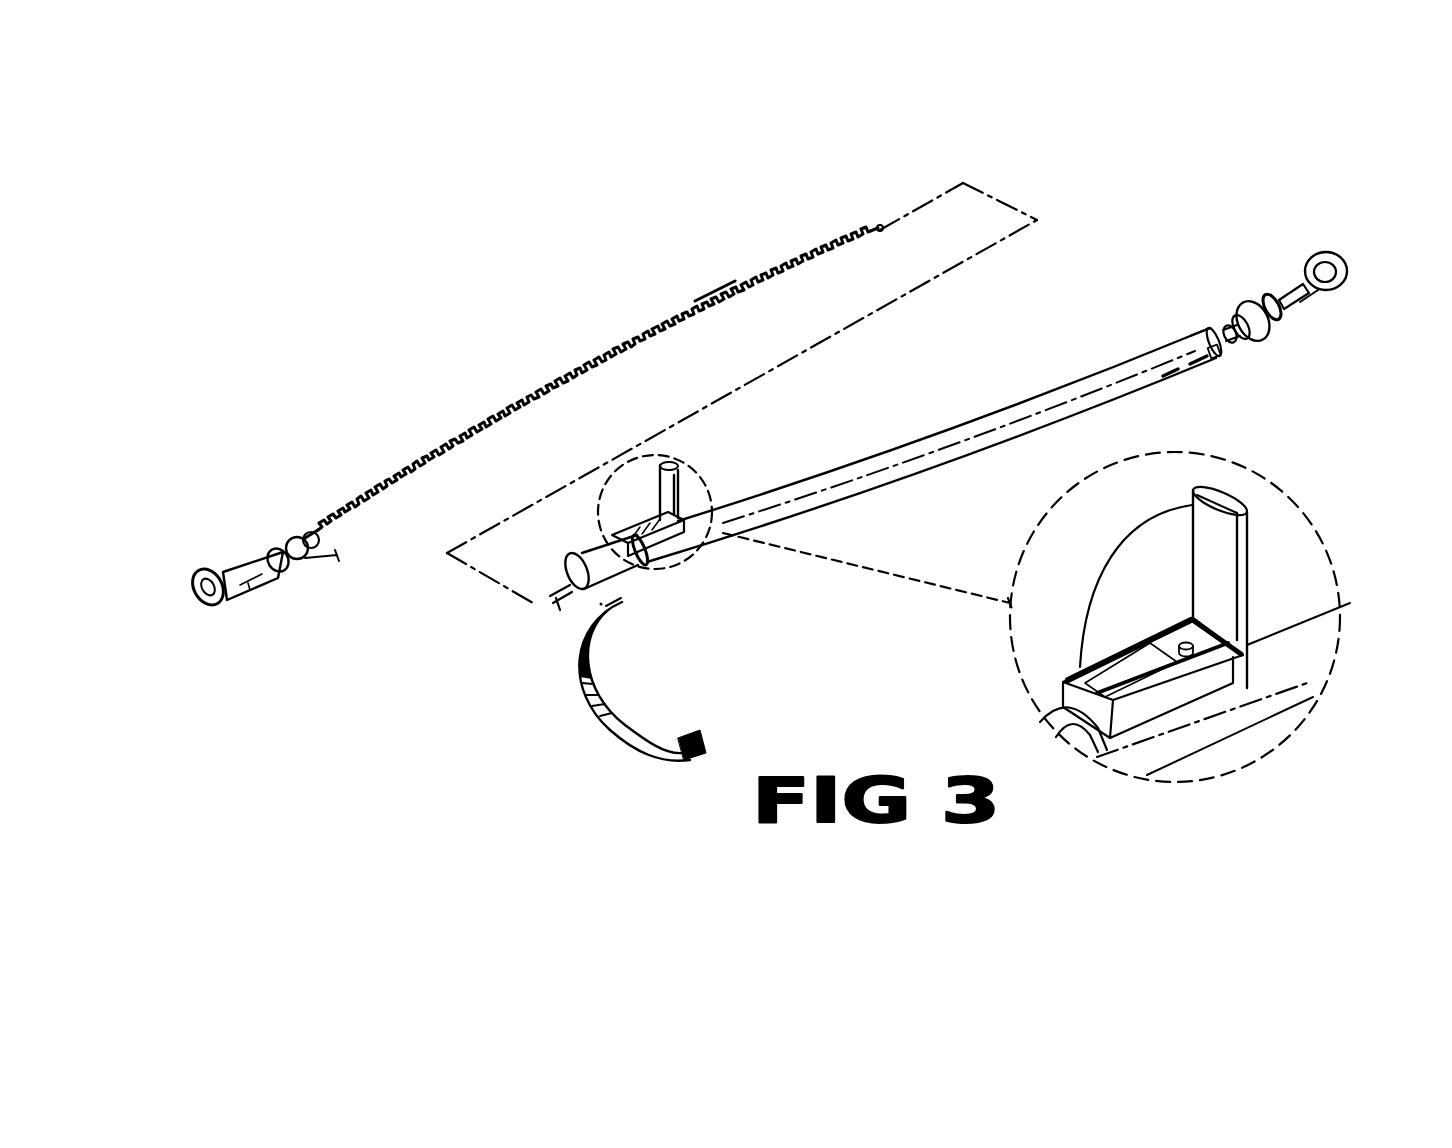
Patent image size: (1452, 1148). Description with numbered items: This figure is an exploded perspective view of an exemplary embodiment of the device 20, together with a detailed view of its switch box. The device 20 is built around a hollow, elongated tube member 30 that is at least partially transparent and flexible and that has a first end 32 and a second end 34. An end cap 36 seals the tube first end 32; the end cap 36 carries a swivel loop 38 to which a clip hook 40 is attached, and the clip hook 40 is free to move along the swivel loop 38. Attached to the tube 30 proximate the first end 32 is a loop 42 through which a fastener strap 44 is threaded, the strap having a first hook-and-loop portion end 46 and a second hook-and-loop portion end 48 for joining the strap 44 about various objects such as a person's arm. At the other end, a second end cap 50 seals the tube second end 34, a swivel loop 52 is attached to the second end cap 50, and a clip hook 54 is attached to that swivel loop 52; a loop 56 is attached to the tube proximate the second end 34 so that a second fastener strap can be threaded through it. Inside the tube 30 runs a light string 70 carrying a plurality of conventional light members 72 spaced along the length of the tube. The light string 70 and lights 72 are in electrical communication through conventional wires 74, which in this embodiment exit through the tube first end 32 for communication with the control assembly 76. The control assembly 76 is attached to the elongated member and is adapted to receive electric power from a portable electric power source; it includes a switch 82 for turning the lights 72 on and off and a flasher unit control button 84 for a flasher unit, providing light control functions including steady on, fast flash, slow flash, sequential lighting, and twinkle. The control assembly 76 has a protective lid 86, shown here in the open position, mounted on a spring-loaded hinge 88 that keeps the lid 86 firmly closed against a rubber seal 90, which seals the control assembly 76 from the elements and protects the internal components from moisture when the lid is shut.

The device 20 is at (1103, 250).
The hollow, elongated tube member 30 is at (915, 442).
The first end 32 is at (592, 553).
The second end 34 is at (1208, 330).
The end cap 36 is at (320, 522).
The swivel loop 38 is at (260, 563).
The clip hook 40 is at (231, 598).
The loop 42 is at (637, 565).
The fastener strap 44 is at (595, 708).
The first hook-and-loop portion end 46 is at (607, 612).
The second hook-and-loop portion end 48 is at (700, 740).
The second end cap 50 is at (1212, 360).
The swivel loop 52 is at (1258, 308).
The clip hook 54 is at (1313, 256).
The loop 56 is at (1182, 377).
The light string 70 is at (490, 413).
The light members 72 is at (733, 280).
The wires 74 is at (562, 603).
The control assembly 76 is at (1247, 687).
The switch 82 is at (1085, 655).
The flasher unit control button 84 is at (1247, 620).
The protective lid 86 is at (1250, 567).
The spring-loaded hinge 88 is at (1257, 660).
The rubber seal 90 is at (1067, 687).